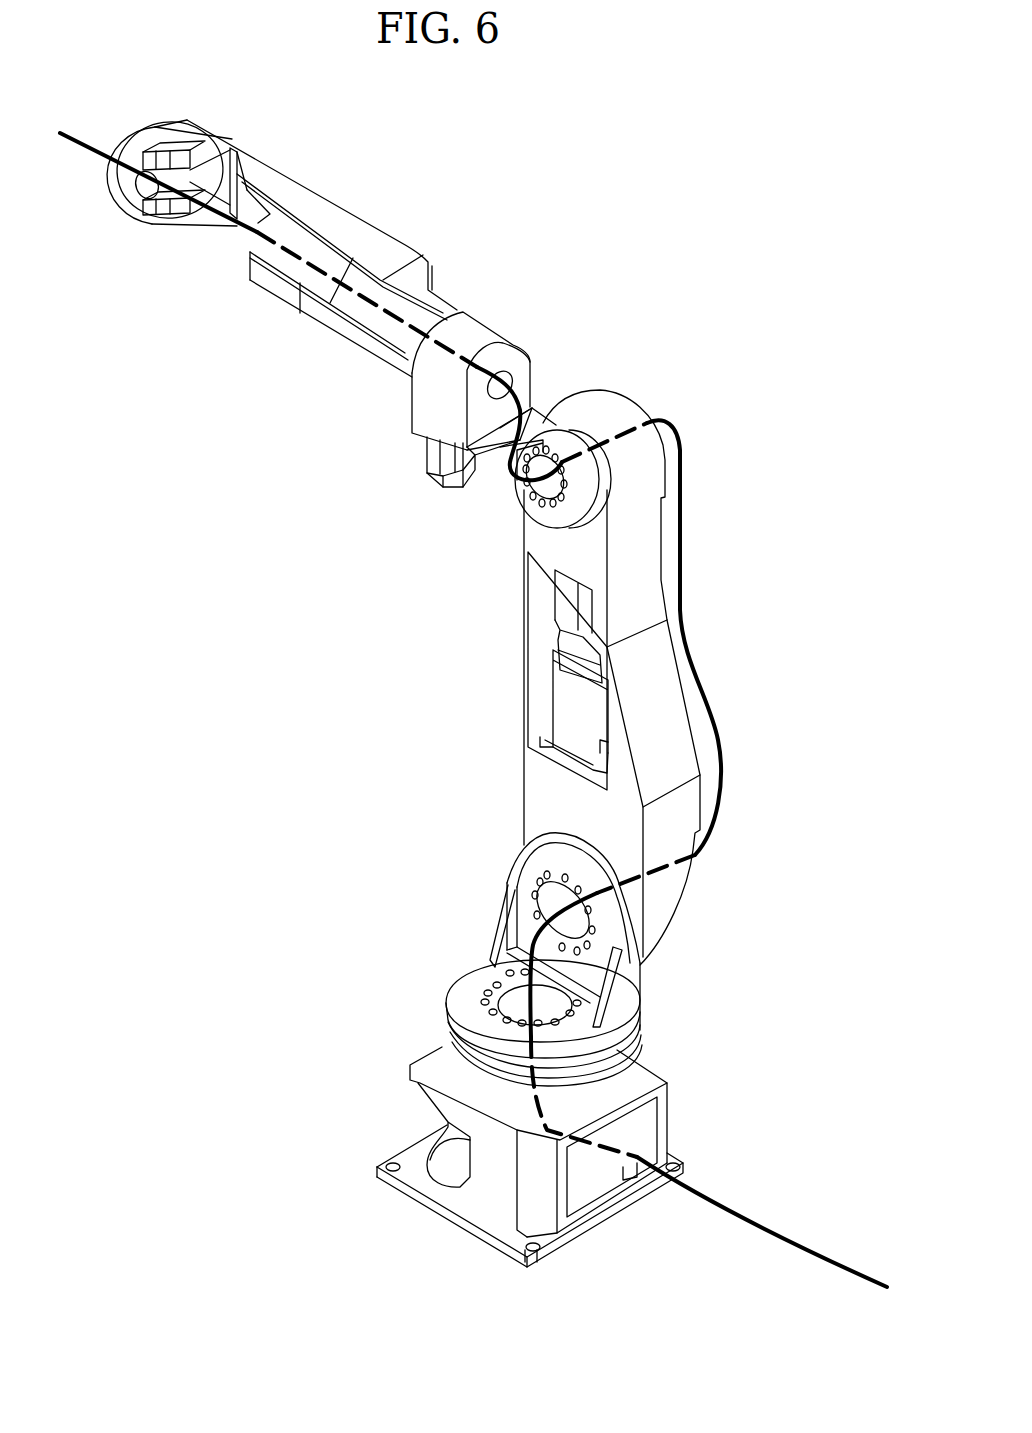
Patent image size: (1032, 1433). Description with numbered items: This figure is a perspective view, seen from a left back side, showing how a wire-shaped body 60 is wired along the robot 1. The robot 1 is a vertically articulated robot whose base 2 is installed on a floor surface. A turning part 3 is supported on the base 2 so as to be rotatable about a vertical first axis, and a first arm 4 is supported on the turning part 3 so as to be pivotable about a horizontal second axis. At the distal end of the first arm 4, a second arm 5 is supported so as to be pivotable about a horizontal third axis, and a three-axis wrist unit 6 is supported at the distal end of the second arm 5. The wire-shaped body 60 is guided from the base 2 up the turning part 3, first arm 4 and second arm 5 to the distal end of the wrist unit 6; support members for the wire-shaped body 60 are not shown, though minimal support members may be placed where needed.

The robot 1 is at (668, 154).
The base 2 is at (492, 1180).
The turning part 3 is at (470, 985).
The first arm 4 is at (522, 764).
The second arm 5 is at (492, 328).
The wrist unit 6 is at (108, 145).
The wire-shaped body 60 is at (686, 552).